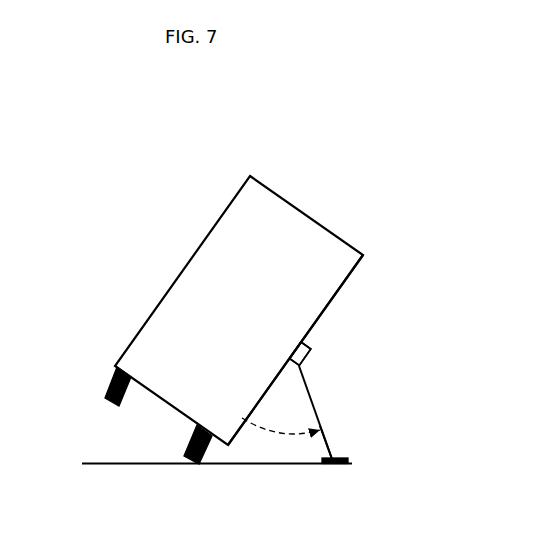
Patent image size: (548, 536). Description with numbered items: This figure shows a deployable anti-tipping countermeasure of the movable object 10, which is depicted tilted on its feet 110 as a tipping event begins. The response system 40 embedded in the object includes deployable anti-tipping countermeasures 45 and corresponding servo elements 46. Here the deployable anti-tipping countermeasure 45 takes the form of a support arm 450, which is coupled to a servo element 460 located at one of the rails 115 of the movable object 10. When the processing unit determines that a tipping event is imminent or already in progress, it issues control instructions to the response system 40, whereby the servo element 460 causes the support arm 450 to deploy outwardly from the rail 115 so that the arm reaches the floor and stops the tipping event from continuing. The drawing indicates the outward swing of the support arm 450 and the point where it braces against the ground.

The movable object 10 is at (196, 253).
The feet 110 is at (112, 381).
The rail 115 is at (353, 273).
The servo element 46 is at (310, 352).
The servo element 460 is at (303, 350).
The response system 40 is at (322, 397).
The deployable anti-tipping countermeasure 45 is at (348, 459).
The support arm 450 is at (325, 440).